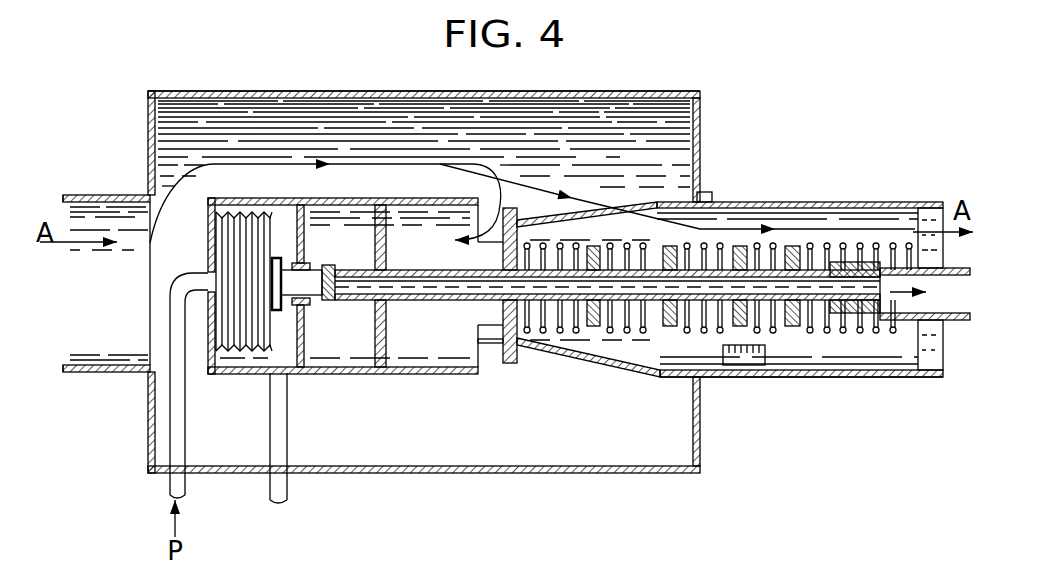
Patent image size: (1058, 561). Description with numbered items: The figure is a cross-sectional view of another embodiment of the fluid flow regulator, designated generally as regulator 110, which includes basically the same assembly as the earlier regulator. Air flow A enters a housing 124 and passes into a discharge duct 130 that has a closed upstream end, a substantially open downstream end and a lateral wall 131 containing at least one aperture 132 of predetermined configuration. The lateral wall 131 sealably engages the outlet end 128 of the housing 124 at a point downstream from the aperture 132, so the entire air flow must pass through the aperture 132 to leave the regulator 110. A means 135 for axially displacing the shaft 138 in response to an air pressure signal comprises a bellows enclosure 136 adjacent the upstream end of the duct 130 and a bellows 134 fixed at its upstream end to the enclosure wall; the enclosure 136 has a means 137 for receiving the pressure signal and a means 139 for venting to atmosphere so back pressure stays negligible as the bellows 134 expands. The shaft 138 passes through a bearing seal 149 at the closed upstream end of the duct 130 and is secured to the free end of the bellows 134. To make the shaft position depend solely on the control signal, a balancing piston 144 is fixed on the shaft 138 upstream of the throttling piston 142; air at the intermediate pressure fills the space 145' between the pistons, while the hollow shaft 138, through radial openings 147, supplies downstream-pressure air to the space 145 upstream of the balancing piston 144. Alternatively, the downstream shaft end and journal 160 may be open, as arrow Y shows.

The flow regulator 110 is at (223, 90).
The housing 124 is at (323, 91).
The outlet end 128 is at (710, 193).
The discharge duct 130 is at (826, 200).
The lateral wall 131 is at (855, 378).
The aperture 132 is at (488, 345).
The bellows 134 is at (250, 211).
The means for axially displacing the shaft 135 is at (198, 258).
The bellows enclosure 136 is at (243, 376).
The means for receiving the air pressure signal 137 is at (198, 308).
The shaft 138 is at (436, 300).
The means for venting 139 is at (288, 453).
The throttling piston 142 is at (507, 365).
The balancing piston 144 is at (380, 374).
The space upstream from the balancing piston 145 is at (349, 239).
The space between throttling piston and balancing piston 145' is at (418, 239).
The radial openings 147 is at (352, 300).
The bearing seal 149 is at (322, 262).
The journal 160 is at (960, 322).